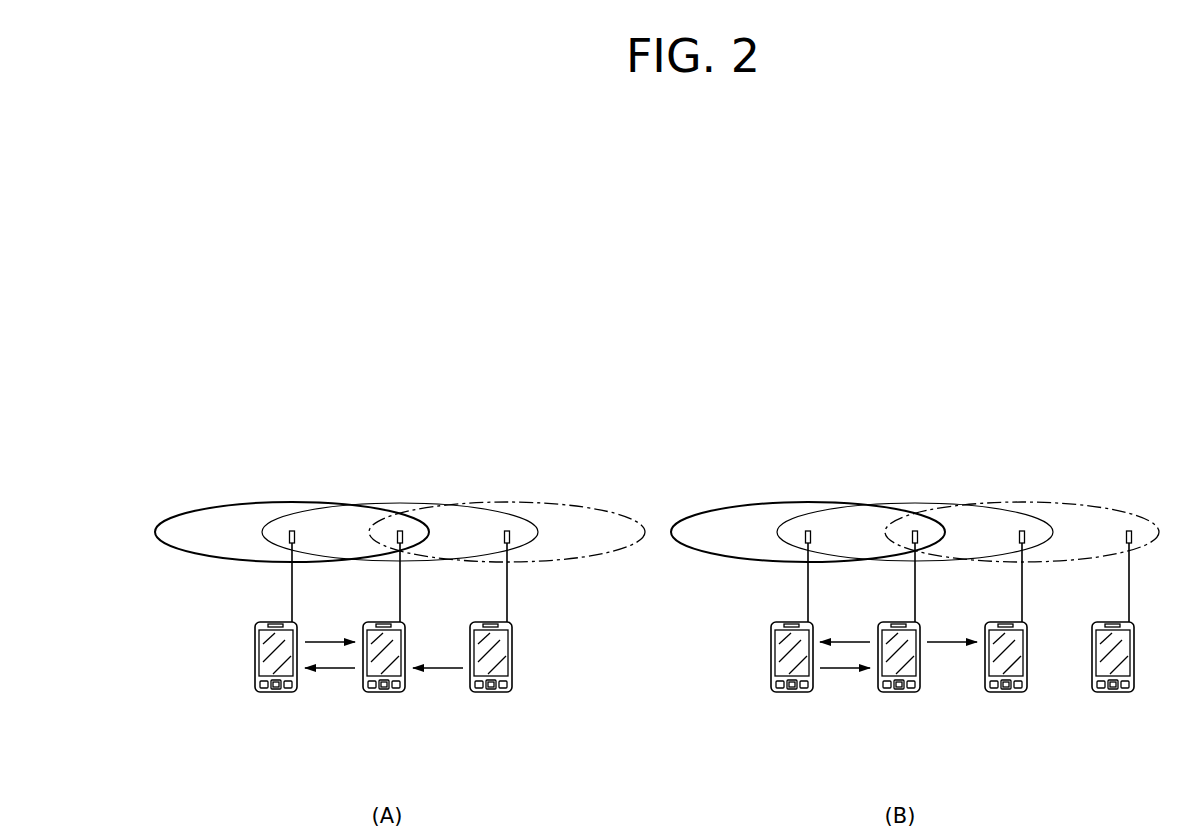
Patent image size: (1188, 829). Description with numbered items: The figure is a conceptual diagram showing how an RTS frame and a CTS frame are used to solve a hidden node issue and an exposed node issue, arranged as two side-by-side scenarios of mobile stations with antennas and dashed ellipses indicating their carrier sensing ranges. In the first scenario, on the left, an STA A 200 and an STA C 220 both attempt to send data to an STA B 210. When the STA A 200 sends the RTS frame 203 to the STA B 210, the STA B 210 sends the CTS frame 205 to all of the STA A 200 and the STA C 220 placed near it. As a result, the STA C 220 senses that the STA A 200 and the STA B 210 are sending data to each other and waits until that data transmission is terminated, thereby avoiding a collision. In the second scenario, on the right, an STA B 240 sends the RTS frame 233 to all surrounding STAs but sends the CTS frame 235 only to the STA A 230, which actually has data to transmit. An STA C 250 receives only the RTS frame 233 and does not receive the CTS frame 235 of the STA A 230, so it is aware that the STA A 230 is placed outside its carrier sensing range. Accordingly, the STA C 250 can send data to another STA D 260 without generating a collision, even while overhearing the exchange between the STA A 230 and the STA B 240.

The STA A 200 is at (278, 644).
The STA B 210 is at (385, 644).
The STA C 220 is at (492, 644).
The RTS frame 203 is at (330, 615).
The CTS frame 205 is at (383, 697).
The STA A 230 is at (793, 644).
The STA B 240 is at (900, 644).
The STA C 250 is at (1007, 644).
The STA D 260 is at (1113, 644).
The RTS frame 233 is at (899, 615).
The CTS frame 235 is at (845, 697).